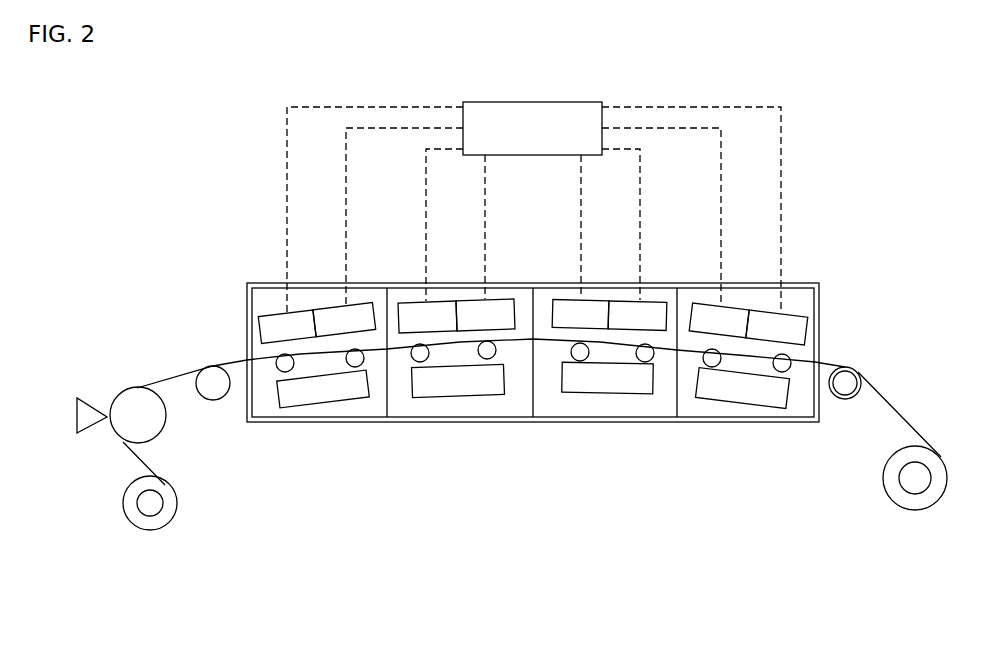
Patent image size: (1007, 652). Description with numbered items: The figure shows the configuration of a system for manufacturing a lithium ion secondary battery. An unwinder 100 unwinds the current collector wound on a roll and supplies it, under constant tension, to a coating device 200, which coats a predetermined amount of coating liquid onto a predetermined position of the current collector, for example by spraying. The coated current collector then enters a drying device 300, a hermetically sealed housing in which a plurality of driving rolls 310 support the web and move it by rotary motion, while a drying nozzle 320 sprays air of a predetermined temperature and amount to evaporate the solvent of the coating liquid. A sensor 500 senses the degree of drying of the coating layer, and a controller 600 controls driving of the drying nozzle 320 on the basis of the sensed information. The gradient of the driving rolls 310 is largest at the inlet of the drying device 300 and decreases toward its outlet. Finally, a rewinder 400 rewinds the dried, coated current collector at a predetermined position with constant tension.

The unwinder 100 is at (152, 522).
The coating device 200 is at (88, 403).
The drying device 300 is at (586, 487).
The driving rolls 310 is at (497, 352).
The drying nozzle 320 is at (542, 354).
The rewinder 400 is at (918, 500).
The sensor 500 is at (503, 321).
The controller 600 is at (534, 207).